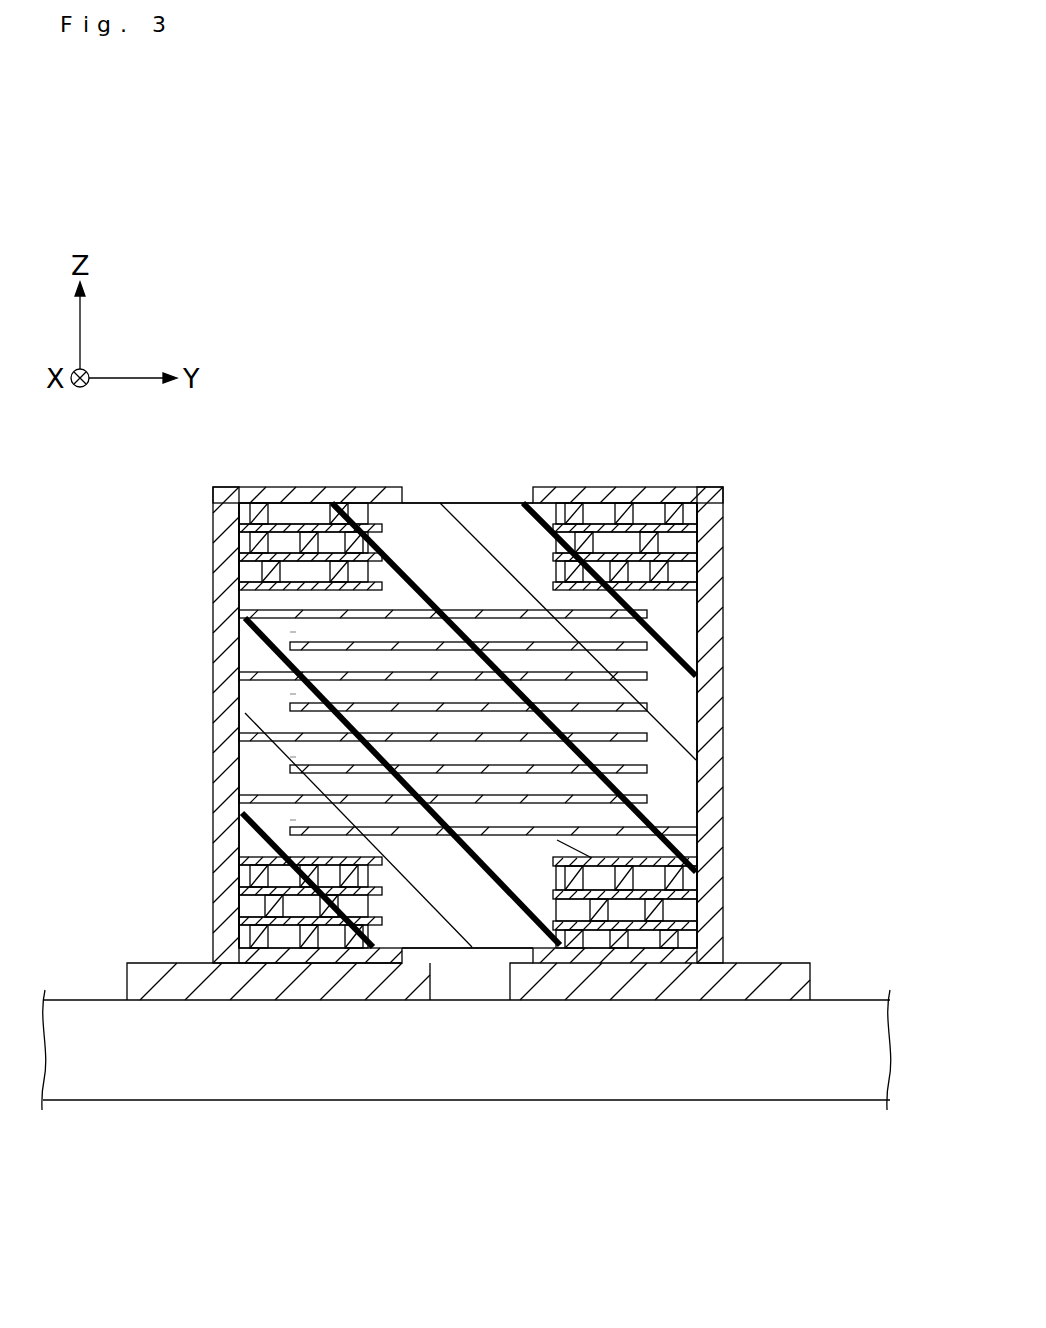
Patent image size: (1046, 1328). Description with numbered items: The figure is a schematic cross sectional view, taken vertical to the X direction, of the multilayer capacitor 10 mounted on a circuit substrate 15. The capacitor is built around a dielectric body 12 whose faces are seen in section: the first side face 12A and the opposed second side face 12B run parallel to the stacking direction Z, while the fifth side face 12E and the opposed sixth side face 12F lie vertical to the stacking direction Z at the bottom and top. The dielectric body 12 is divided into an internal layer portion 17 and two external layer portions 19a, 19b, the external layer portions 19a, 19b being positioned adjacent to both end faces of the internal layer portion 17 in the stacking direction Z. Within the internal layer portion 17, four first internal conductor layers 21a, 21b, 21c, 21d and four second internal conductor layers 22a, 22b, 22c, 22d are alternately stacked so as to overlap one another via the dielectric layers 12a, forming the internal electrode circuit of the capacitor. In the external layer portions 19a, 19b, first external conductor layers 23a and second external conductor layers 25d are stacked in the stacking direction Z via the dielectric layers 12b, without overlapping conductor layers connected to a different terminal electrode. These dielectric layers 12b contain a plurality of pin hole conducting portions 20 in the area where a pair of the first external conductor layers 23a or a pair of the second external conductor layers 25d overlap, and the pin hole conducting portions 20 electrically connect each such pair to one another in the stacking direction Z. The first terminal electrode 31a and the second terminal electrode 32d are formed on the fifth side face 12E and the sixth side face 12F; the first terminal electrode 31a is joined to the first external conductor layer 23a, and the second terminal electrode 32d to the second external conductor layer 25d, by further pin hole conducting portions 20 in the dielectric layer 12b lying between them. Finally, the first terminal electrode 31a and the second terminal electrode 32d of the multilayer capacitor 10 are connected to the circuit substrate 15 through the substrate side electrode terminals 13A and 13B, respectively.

The multilayer capacitor 10 is at (486, 346).
The dielectric body 12 is at (447, 503).
The sixth side face 12F is at (503, 503).
The fifth side face 12E is at (458, 950).
The first side face 12A is at (697, 603).
The second side face 12B is at (239, 623).
The dielectric layers 12a is at (300, 815).
The dielectric layers 12b is at (239, 513).
The substrate side electrode terminal 13A is at (745, 985).
The substrate side electrode terminal 13B is at (170, 990).
The circuit substrate 15 is at (860, 1075).
The internal layer portion 17 is at (790, 608).
The external layer portion 19a is at (97, 470).
The external layer portion 19b is at (97, 783).
The pin hole conducting portion 20 is at (327, 515).
The first internal conductor layer 21a is at (697, 831).
The first internal conductor layer 21b is at (697, 769).
The first internal conductor layer 21c is at (697, 707).
The first internal conductor layer 21d is at (697, 646).
The second internal conductor layer 22a is at (697, 799).
The second internal conductor layer 22b is at (697, 737).
The second internal conductor layer 22c is at (697, 676).
The second internal conductor layer 22d is at (697, 614).
The first external conductor layer 23a is at (700, 528).
The second external conductor layer 25d is at (239, 528).
The first terminal electrode 31a is at (720, 488).
The second terminal electrode 32d is at (242, 490).